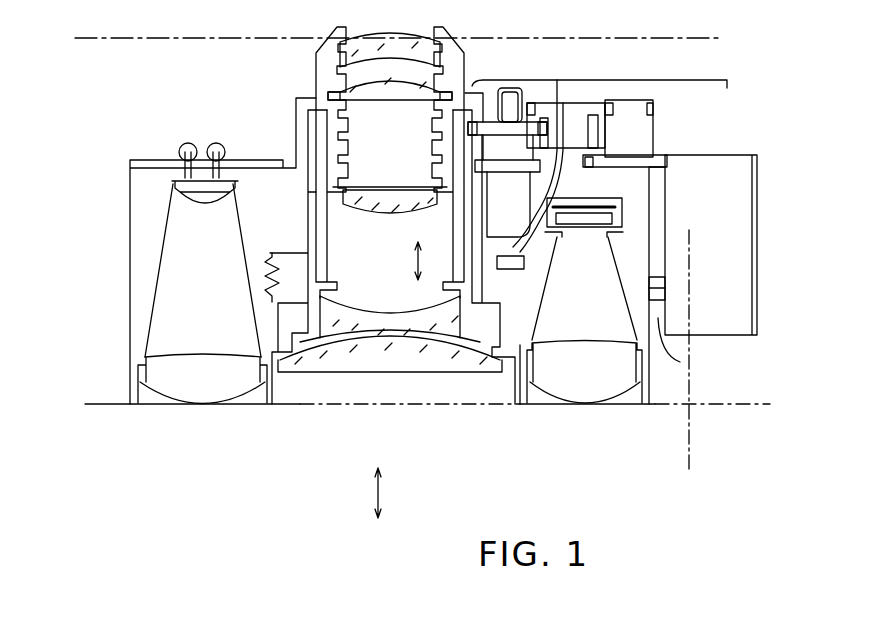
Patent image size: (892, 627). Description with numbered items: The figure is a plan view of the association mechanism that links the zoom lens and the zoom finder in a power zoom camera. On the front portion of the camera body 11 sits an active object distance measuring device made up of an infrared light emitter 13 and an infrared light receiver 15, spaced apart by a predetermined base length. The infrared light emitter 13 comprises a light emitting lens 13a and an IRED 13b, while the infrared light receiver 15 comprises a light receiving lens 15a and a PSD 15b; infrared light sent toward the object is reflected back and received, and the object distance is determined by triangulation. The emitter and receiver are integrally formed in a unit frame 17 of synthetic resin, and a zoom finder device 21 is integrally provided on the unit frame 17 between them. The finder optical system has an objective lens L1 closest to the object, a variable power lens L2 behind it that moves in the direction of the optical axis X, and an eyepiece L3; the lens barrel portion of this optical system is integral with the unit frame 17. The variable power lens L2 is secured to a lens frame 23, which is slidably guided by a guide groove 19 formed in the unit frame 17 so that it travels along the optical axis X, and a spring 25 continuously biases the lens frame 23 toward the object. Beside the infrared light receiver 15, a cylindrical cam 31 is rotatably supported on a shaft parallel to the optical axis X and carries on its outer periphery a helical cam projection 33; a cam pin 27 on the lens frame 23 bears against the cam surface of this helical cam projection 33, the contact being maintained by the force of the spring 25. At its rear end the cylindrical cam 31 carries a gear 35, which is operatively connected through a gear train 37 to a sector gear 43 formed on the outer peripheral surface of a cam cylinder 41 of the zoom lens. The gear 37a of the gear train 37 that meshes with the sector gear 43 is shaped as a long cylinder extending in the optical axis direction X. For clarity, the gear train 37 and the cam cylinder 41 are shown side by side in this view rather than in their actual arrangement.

The camera body 11 is at (214, 90).
The infrared light emitter 13 is at (225, 433).
The light emitting lens 13a is at (167, 388).
The IRED 13b is at (160, 240).
The infrared light receiver 15 is at (573, 429).
The light receiving lens 15a is at (616, 383).
The PSD 15b is at (623, 219).
The unit frame 17 is at (138, 197).
The guide groove 19 is at (311, 138).
The zoom finder device 21 is at (451, 429).
The lens frame 23 is at (303, 210).
The spring 25 is at (268, 297).
The cam pin 27 is at (433, 193).
The cylindrical cam 31 is at (497, 150).
The helical cam projection 33 is at (545, 205).
The gear 35 is at (524, 88).
The gear train 37 is at (583, 80).
The gear 37a is at (737, 299).
The cam cylinder 41 is at (705, 428).
The sector gear 43 is at (680, 362).
The objective lens L1 is at (318, 366).
The variable power lens L2 is at (378, 320).
The eyepiece L3 is at (375, 52).
The optical axis X is at (382, 498).